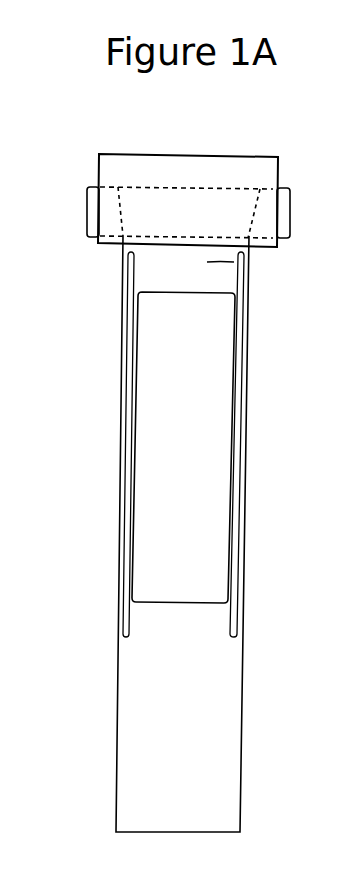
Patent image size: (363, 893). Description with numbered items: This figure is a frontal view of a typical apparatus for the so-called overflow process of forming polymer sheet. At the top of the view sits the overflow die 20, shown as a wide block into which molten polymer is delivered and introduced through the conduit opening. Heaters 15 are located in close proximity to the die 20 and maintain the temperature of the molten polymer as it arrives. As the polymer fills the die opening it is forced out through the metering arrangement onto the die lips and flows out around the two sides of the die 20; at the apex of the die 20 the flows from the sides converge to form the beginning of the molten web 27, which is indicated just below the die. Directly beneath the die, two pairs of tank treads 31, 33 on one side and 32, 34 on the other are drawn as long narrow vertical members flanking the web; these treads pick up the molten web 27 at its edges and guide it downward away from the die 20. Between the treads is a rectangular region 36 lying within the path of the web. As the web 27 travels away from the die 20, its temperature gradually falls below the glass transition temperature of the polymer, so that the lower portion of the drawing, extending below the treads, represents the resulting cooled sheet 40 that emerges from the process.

The heaters 15 is at (198, 154).
The overflow die 20 is at (287, 218).
The molten web 27 is at (249, 263).
The tank tread 31 is at (81, 444).
The tank tread 33 is at (123, 364).
The tank tread 32 is at (282, 444).
The tank tread 34 is at (248, 367).
The inner panel 36 is at (222, 519).
The cooled sheet 40 is at (130, 728).